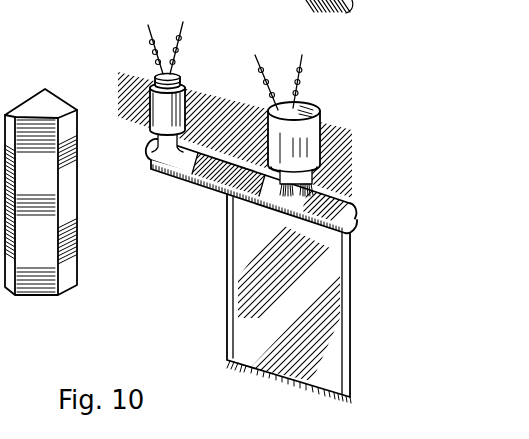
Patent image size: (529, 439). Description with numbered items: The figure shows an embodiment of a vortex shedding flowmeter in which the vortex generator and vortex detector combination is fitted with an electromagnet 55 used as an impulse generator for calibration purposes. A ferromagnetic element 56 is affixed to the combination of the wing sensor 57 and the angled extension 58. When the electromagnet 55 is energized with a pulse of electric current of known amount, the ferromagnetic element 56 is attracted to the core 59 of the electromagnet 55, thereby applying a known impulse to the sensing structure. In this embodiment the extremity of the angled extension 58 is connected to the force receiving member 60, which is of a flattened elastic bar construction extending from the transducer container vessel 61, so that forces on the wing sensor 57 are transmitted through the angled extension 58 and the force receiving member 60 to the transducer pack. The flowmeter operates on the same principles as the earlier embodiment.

The electromagnet 55 is at (288, 148).
The ferromagnetic element 56 is at (267, 182).
The wing sensor 57 is at (288, 290).
The angled extension 58 is at (262, 163).
The core 59 is at (318, 172).
The force receiving member 60 is at (150, 163).
The transducer container vessel 61 is at (165, 108).